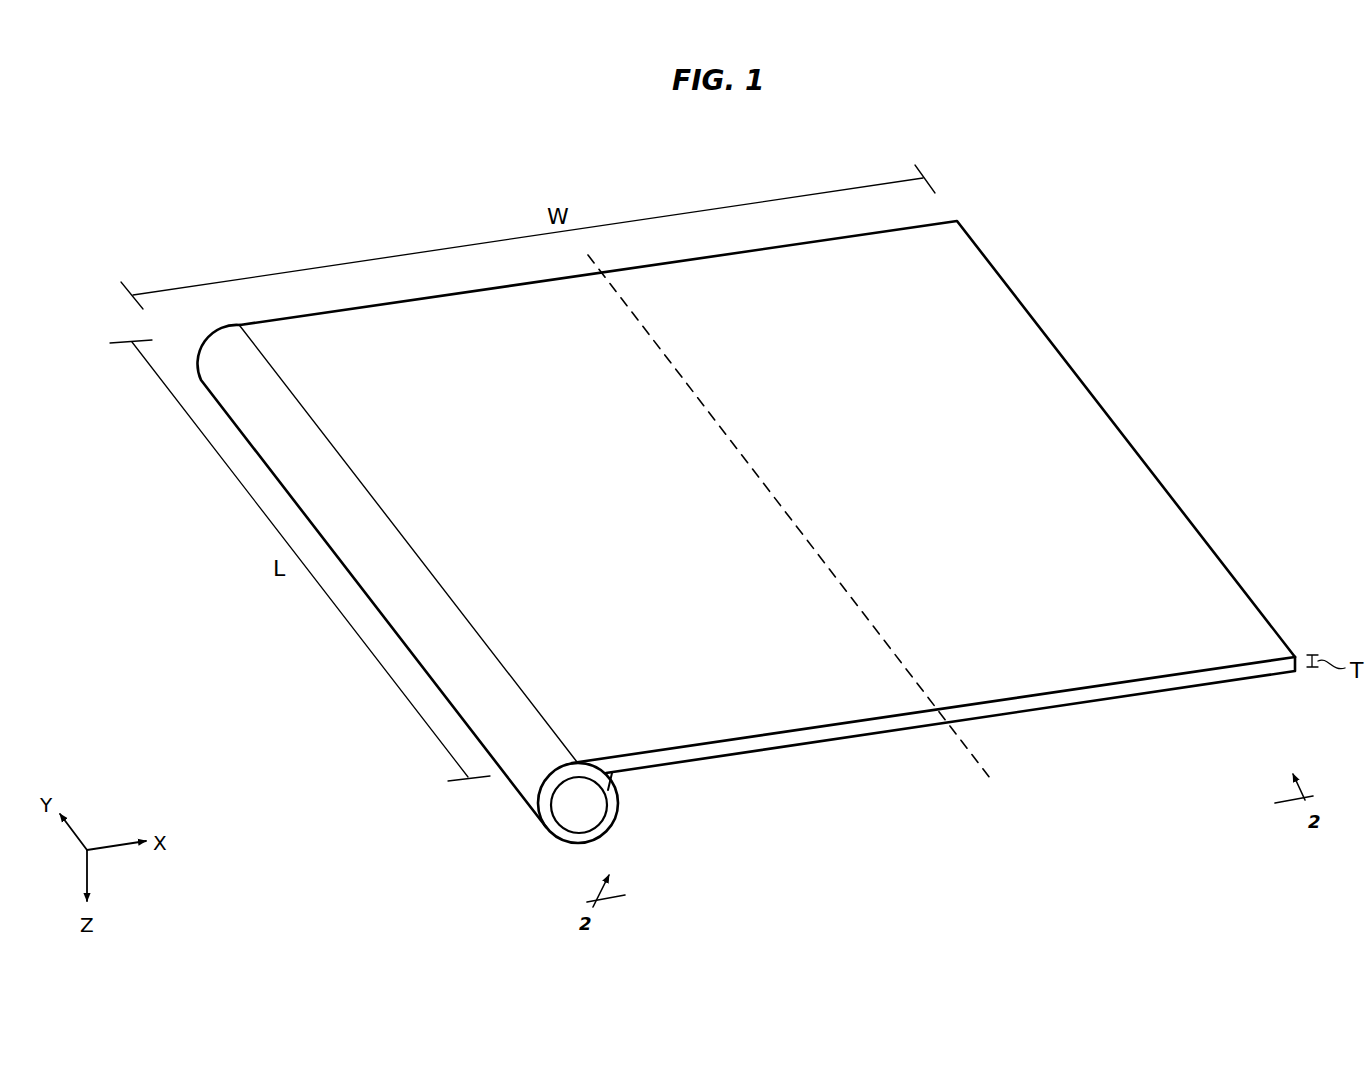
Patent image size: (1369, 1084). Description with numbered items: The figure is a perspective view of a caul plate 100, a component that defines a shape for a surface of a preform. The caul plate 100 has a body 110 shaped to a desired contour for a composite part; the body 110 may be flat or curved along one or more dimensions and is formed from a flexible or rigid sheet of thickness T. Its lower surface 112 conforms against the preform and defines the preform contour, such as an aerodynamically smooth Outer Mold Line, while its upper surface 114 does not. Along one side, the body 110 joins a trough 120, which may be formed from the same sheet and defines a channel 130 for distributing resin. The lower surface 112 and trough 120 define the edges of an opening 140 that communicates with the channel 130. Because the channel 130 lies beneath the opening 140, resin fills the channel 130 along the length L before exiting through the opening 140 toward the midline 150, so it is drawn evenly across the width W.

The caul plate 100 is at (746, 538).
The body 110 is at (831, 478).
The lower surface 112 is at (773, 754).
The upper surface 114 is at (760, 632).
The trough 120 is at (363, 545).
The channel 130 is at (567, 817).
The opening 140 is at (626, 776).
The midline 150 is at (690, 388).